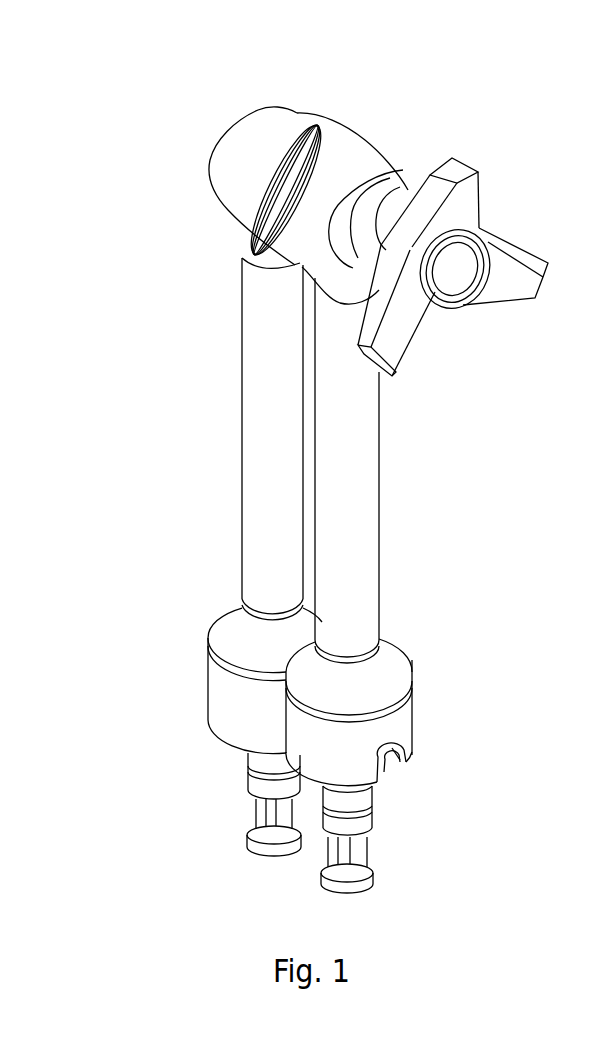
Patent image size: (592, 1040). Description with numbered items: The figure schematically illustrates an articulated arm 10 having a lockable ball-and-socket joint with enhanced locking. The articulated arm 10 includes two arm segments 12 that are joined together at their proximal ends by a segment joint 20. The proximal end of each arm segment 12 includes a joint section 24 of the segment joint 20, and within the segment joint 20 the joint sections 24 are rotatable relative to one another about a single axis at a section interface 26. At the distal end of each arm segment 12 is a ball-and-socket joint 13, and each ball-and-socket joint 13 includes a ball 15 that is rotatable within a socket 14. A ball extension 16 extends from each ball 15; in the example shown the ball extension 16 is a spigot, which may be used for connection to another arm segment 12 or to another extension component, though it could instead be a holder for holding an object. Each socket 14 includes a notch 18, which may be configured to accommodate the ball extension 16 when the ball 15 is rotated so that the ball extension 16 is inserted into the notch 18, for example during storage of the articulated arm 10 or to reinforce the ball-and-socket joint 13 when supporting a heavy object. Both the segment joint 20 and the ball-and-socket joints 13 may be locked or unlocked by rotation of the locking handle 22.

The articulated arm 10 is at (156, 260).
The arm segment 12 is at (242, 477).
The ball-and-socket joint 13 is at (186, 702).
The socket 14 is at (217, 640).
The ball 15 is at (380, 763).
The ball extension 16 is at (255, 782).
The notch 18 is at (400, 758).
The segment joint 20 is at (287, 83).
The locking handle 22 is at (473, 253).
The joint section 24 is at (300, 120).
The section interface 26 is at (272, 180).